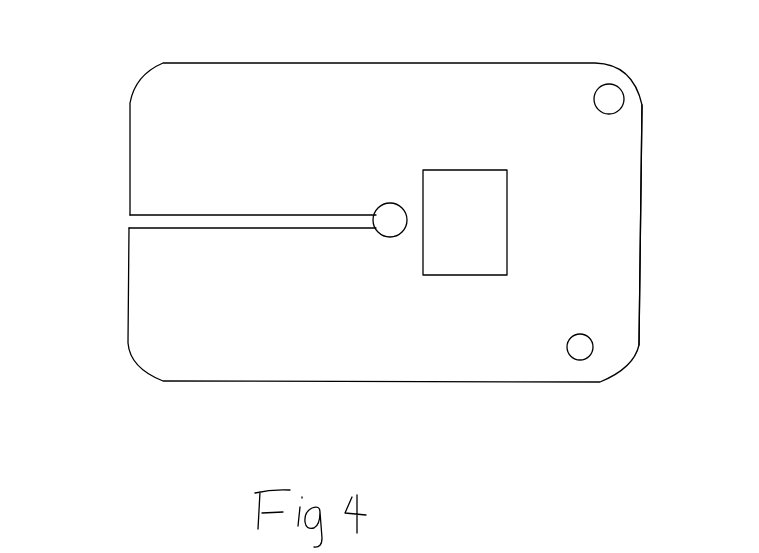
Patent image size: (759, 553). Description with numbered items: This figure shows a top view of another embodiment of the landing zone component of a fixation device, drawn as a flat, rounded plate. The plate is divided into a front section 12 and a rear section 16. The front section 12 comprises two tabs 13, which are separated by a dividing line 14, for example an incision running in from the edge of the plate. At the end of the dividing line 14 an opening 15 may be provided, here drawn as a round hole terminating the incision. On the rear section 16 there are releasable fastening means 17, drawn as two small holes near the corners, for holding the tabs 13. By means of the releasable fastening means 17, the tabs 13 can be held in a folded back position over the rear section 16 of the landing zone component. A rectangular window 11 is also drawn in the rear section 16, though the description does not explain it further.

The rectangular window 11 is at (485, 228).
The front section 12 is at (243, 365).
The tabs 13 is at (153, 168).
The dividing line 14 is at (243, 220).
The opening 15 is at (386, 228).
The rear section 16 is at (622, 243).
The releasable fastening means 17 is at (612, 95).